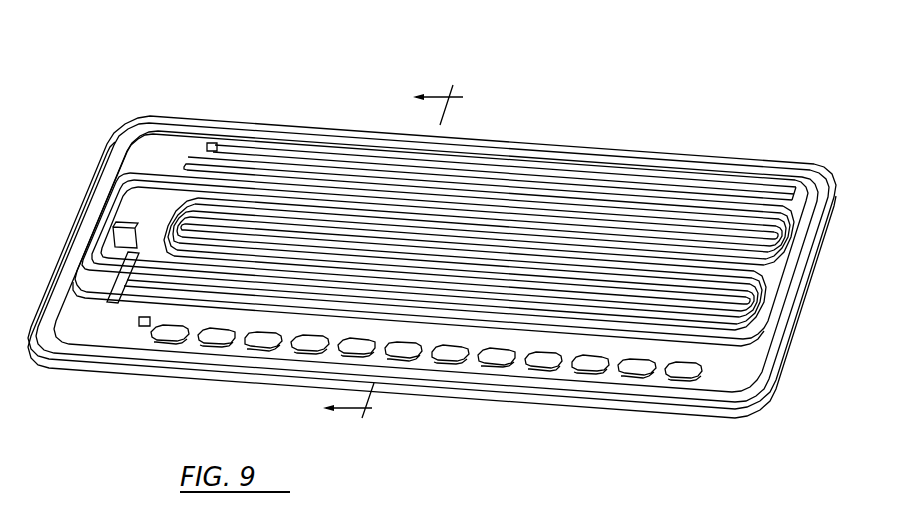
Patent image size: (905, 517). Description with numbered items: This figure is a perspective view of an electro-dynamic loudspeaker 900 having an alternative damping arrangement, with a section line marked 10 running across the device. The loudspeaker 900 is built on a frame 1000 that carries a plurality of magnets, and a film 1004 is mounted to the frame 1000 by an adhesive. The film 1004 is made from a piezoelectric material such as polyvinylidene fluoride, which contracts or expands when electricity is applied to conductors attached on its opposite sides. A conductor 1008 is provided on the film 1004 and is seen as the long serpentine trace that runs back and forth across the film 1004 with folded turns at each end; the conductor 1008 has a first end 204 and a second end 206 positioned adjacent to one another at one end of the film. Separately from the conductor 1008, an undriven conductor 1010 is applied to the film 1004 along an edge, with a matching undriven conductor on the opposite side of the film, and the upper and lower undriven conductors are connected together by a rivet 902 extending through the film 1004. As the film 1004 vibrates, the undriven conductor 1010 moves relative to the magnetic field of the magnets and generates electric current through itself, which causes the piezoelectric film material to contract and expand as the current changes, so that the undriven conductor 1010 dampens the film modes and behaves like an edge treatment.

The electro-dynamic loudspeaker 900 is at (638, 90).
The frame 1000 is at (106, 369).
The film 1004 is at (184, 117).
The undriven conductor 1010 is at (533, 172).
The conductor 1008 is at (726, 206).
The rivet 902 is at (214, 143).
The second end 206 is at (120, 236).
The first end 204 is at (92, 295).
The section line 10- 10 is at (393, 256).